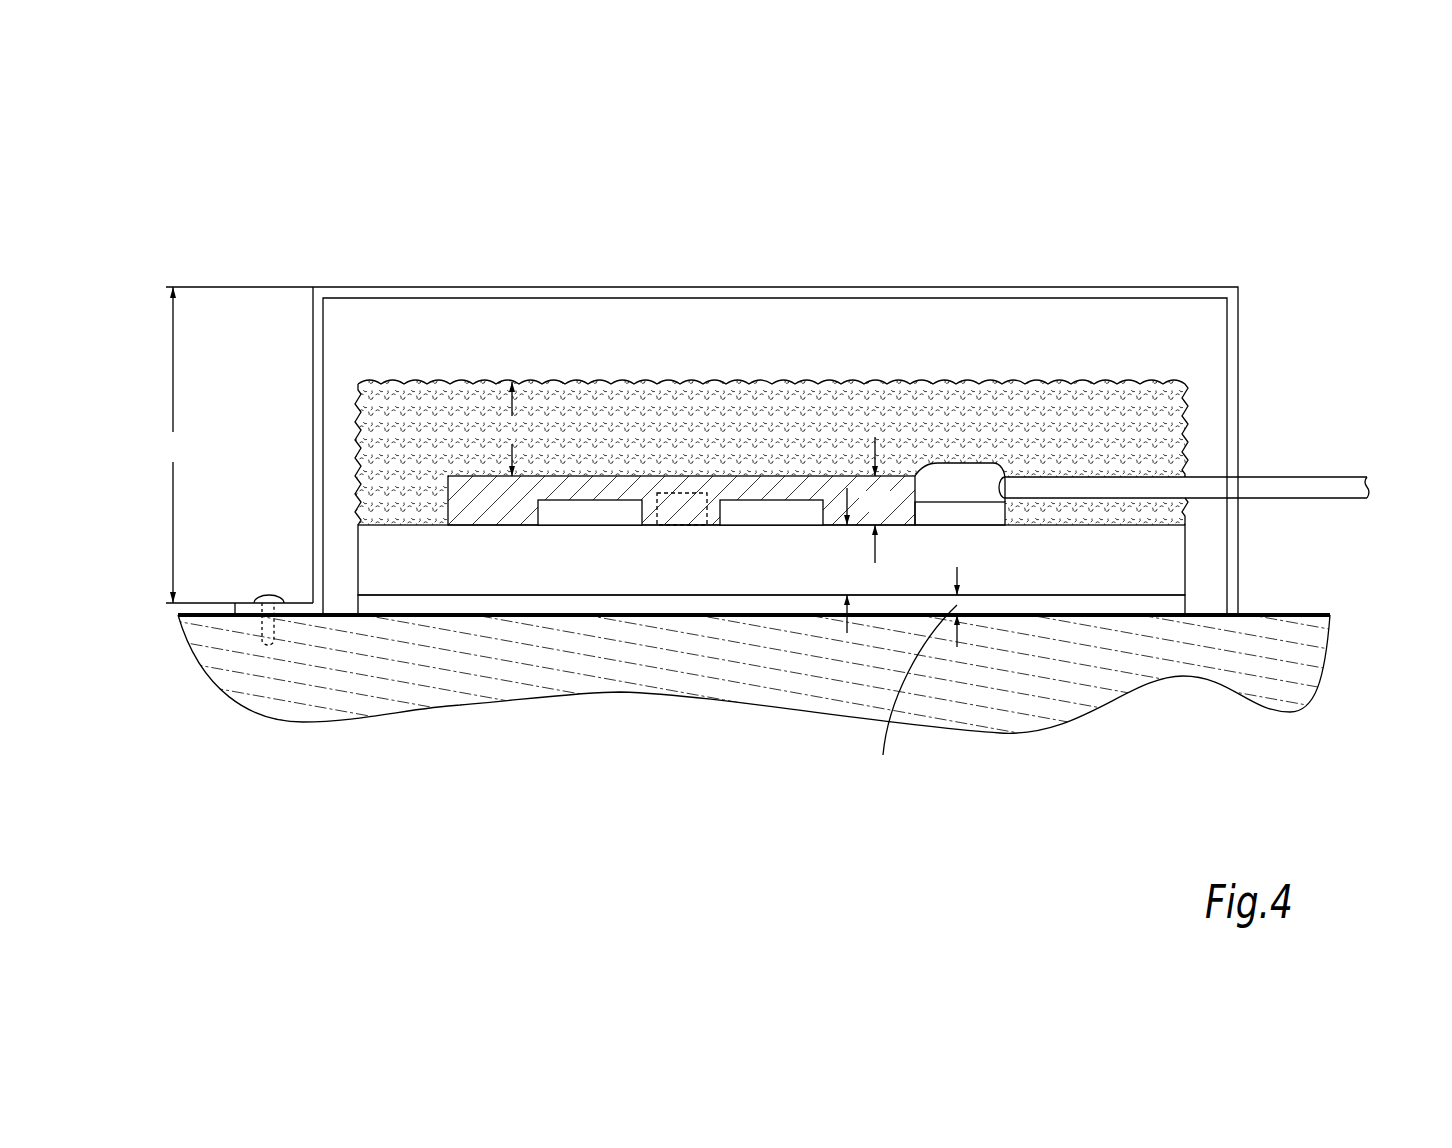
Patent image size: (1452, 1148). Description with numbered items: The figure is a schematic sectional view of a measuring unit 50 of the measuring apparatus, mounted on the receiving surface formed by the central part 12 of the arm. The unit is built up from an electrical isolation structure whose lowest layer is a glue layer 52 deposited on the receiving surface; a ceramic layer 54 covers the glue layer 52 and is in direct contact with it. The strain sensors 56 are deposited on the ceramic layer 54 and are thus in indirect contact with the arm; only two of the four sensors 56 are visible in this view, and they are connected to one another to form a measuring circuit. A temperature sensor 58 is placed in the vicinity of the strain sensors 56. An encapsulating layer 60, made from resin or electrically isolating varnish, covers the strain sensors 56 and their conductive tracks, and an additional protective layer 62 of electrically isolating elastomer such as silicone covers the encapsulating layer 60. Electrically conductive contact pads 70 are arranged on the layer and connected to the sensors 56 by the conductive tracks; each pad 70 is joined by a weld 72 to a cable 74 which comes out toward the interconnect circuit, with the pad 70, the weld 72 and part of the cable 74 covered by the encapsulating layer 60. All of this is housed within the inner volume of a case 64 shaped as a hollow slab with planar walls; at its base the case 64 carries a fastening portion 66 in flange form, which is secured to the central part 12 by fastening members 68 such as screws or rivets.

The central part 12 is at (1293, 657).
The measuring unit 50 is at (1073, 183).
The glue layer 52 is at (1173, 603).
The ceramic layer 54 is at (1160, 557).
The strain sensors 56 is at (587, 515).
The temperature sensor 58 is at (697, 490).
The encapsulating layer 60 is at (455, 500).
The additional protective layer 62 is at (1150, 410).
The case 64 is at (1173, 292).
The fastening portion 66 is at (296, 608).
The fastening members 68 is at (267, 593).
The contact pads 70 is at (957, 517).
The weld 72 is at (990, 480).
The cable 74 is at (1322, 490).